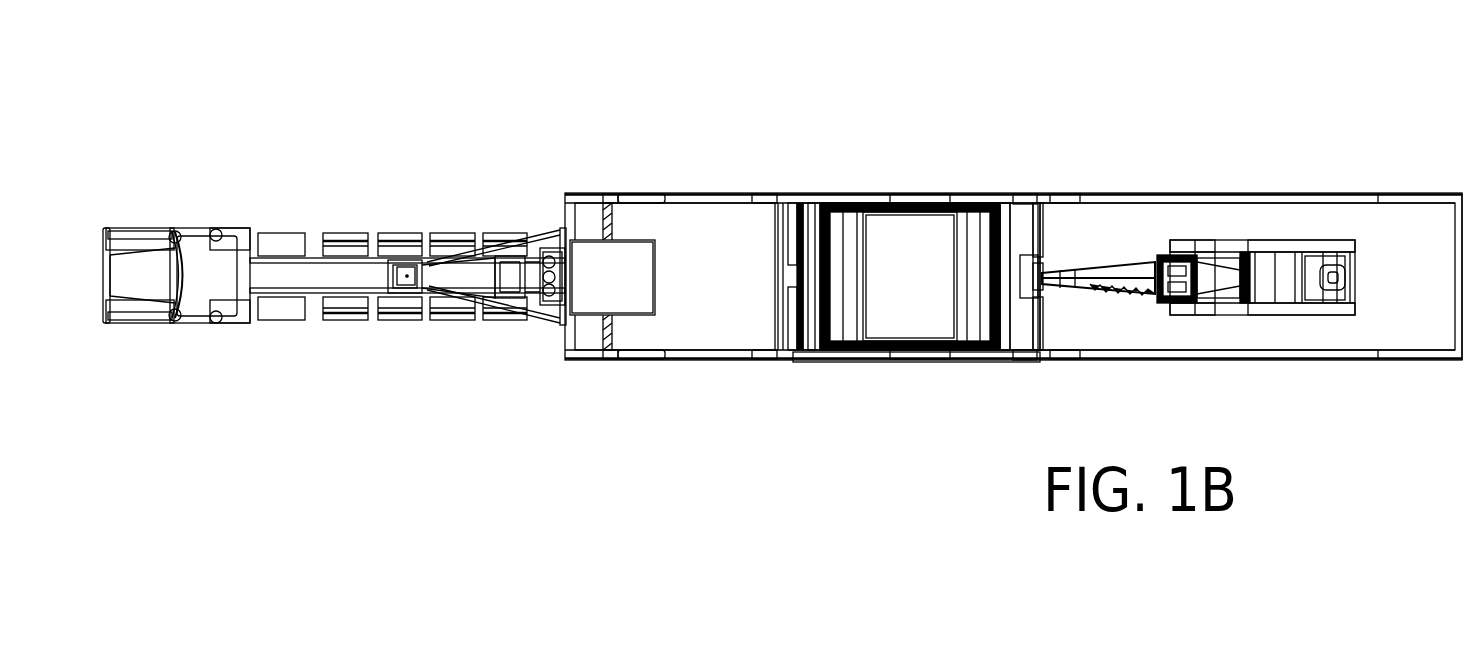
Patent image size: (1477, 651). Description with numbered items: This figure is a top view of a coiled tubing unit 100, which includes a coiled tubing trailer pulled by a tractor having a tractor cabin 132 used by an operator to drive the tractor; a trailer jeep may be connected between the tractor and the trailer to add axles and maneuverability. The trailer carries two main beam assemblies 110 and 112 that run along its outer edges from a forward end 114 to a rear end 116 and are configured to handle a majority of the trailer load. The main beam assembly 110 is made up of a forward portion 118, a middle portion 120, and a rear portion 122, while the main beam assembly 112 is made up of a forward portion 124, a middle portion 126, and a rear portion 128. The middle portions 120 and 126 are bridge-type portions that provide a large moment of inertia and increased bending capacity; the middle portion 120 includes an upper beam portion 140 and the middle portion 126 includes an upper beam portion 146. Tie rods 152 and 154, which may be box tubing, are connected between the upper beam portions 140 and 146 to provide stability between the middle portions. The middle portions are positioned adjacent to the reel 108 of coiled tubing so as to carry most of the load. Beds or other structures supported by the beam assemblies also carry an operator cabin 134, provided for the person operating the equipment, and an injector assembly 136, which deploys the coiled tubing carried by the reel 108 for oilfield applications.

The coiled tubing unit 100 is at (1187, 24).
The tractor cabin 132 is at (151, 228).
The forward end 114 is at (521, 205).
The main beam assembly 110 is at (639, 379).
The main beam assembly 112 is at (630, 181).
The forward portion 124 is at (702, 194).
The forward portion 118 is at (720, 363).
The operator cabin 134 is at (655, 299).
The tie rod 152 is at (803, 243).
The middle portion 120 is at (973, 370).
The middle portion 126 is at (920, 173).
The upper beam portion 146 is at (868, 195).
The reel 108 is at (937, 246).
The upper beam portion 140 is at (878, 363).
The tie rod 154 is at (1042, 244).
The rear end 116 is at (1416, 176).
The rear portion 128 is at (1197, 193).
The rear portion 122 is at (1268, 358).
The injector assembly 136 is at (1287, 224).